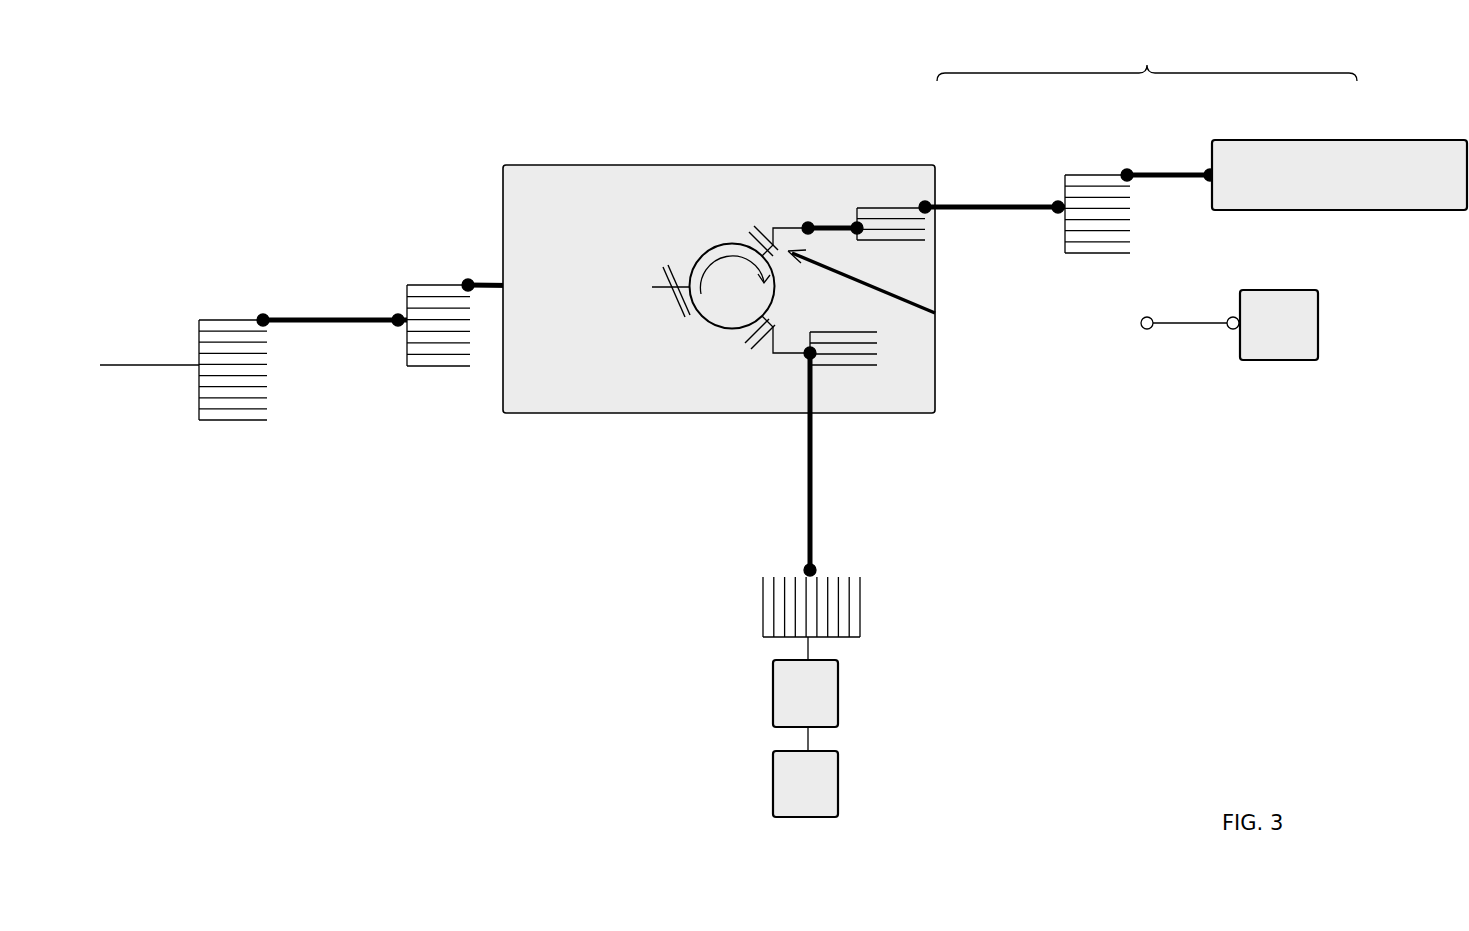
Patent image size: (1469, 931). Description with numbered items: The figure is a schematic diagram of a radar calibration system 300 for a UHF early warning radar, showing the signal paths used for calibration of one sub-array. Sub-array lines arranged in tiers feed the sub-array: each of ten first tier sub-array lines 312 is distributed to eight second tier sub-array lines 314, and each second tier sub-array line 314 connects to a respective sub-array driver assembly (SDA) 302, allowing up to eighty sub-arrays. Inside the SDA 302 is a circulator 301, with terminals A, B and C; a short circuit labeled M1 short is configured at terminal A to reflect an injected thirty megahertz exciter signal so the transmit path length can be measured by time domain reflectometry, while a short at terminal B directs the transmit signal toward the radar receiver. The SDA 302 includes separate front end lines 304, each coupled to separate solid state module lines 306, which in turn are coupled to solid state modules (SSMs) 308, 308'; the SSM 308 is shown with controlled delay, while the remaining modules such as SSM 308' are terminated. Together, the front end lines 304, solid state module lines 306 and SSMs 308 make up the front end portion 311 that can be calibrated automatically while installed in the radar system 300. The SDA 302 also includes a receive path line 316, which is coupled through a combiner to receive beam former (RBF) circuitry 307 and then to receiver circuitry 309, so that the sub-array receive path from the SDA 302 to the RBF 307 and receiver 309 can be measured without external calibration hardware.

The radar calibration system 300 is at (1185, 558).
The circulator 301 is at (752, 298).
The sub-array driver assembly (SDA) 302 is at (690, 242).
The front end line 304 is at (898, 207).
The solid state module line 306 is at (1067, 174).
The receive beam former (RBF) circuitry 307 is at (840, 697).
The solid state module (SSM) 308 is at (1339, 152).
The solid state module (SSM) 308' is at (1266, 325).
The receiver circuitry 309 is at (840, 787).
The front end portion 311 is at (1147, 58).
The first tier sub-array line 312 is at (233, 422).
The second tier sub-array line 314 is at (437, 368).
The receive path line 316 is at (805, 432).